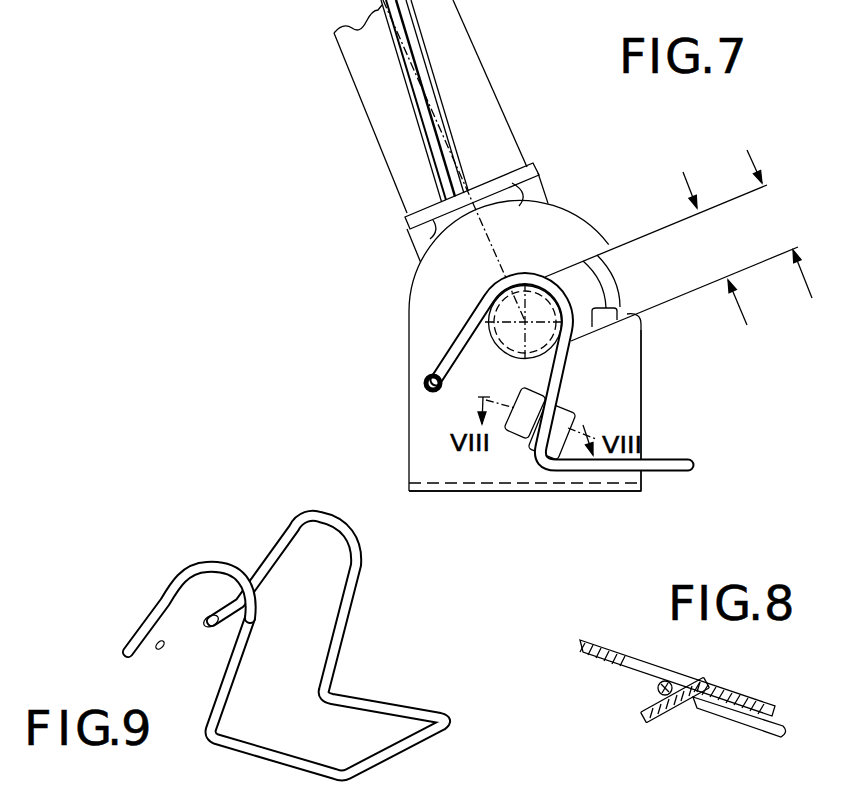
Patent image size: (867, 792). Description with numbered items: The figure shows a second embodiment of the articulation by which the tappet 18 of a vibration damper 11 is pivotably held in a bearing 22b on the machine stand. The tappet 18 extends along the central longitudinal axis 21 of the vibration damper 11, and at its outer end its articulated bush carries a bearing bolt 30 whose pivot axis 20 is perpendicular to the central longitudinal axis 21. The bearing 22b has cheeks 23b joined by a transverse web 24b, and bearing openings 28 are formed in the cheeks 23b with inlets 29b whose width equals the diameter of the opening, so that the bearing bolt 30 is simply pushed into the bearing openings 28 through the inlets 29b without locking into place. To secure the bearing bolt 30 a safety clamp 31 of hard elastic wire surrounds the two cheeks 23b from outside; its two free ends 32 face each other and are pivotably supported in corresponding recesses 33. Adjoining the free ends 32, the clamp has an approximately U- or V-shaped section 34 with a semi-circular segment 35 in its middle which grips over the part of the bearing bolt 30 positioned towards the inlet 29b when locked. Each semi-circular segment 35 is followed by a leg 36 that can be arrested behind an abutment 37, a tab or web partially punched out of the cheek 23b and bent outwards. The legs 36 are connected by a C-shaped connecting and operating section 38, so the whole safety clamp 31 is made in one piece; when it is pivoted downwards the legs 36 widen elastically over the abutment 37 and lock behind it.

In FIG. 7, the vibration damper 11 is at (505, 96).
In FIG. 7, the tappet 18 is at (383, 93).
In FIG. 7, the central longitudinal axis 21 is at (437, 132).
In FIG. 7, the pivot axis 20 is at (523, 321).
In FIG. 7, the bearing 22b is at (407, 355).
In FIG. 7, the cheeks 23b is at (628, 378).
In FIG. 8, the cheeks 23b is at (603, 640).
In FIG. 7, the transverse web 24b is at (523, 492).
In FIG. 7, the bearing openings 28 is at (500, 343).
In FIG. 7, the inlets 29b is at (623, 296).
In FIG. 7, the bearing bolt 30 is at (540, 303).
In FIG. 7, the safety clamp 31 is at (528, 349).
In FIG. 9, the safety clamp 31 is at (278, 620).
In FIG. 7, the free ends 32 is at (423, 383).
In FIG. 9, the free ends 32 is at (213, 627).
In FIG. 7, the recesses 33 is at (428, 393).
In FIG. 7, the U- or V-shaped section 34 is at (466, 316).
In FIG. 9, the U- or V-shaped section 34 is at (162, 608).
In FIG. 7, the semi-circular segment 35 is at (515, 271).
In FIG. 9, the semi-circular segment 35 is at (205, 560).
In FIG. 7, the leg 36 is at (560, 367).
In FIG. 9, the leg 36 is at (333, 650).
In FIG. 8, the leg 36 is at (658, 688).
In FIG. 7, the abutment 37 is at (556, 421).
In FIG. 8, the abutment 37 is at (667, 708).
In FIG. 7, the C-shaped connecting and operating section 38 is at (691, 467).
In FIG. 9, the C-shaped connecting and operating section 38 is at (393, 749).
In FIG. 8, the C-shaped connecting and operating section 38 is at (757, 717).